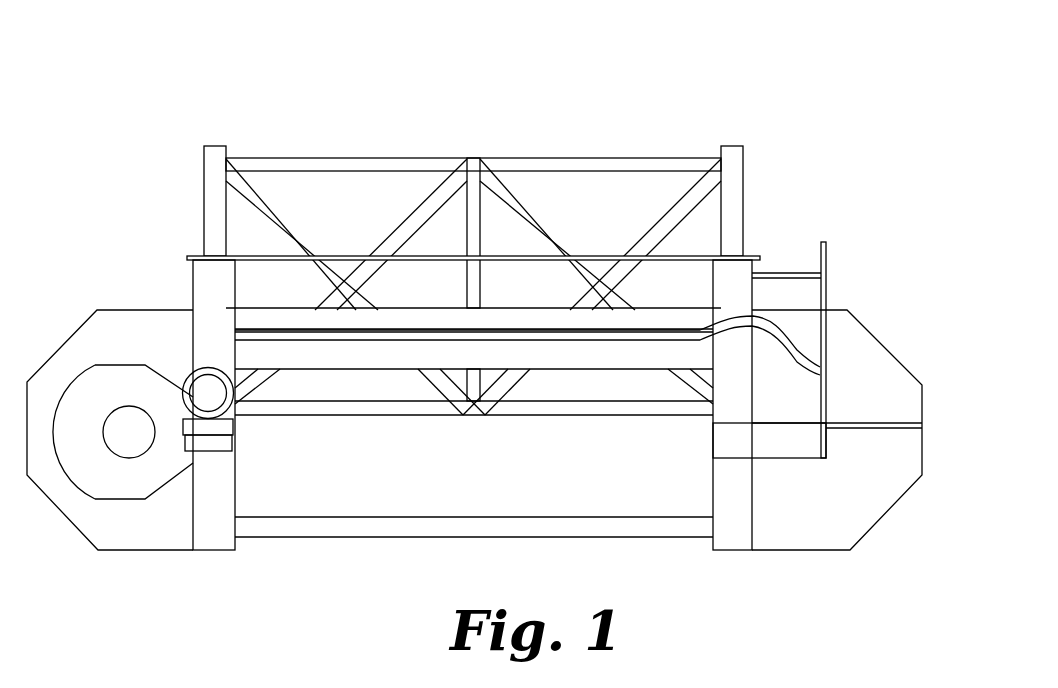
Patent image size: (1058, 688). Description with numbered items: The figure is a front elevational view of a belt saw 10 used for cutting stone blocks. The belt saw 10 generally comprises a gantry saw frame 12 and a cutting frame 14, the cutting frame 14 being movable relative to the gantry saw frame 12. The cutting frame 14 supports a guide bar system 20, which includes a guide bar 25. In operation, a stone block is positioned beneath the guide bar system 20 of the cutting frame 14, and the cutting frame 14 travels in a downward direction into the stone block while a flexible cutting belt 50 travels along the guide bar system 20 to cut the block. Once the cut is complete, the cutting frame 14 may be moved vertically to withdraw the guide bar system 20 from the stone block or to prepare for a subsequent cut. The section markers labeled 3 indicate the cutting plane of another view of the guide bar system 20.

The belt saw 10 is at (696, 88).
The gantry saw frame 12 is at (770, 199).
The cutting frame 14 is at (769, 247).
The guide bar system 20 is at (649, 580).
The guide bar 25 is at (470, 523).
The flexible cutting belt 50 is at (530, 548).
The section line 3- 3 is at (330, 490).